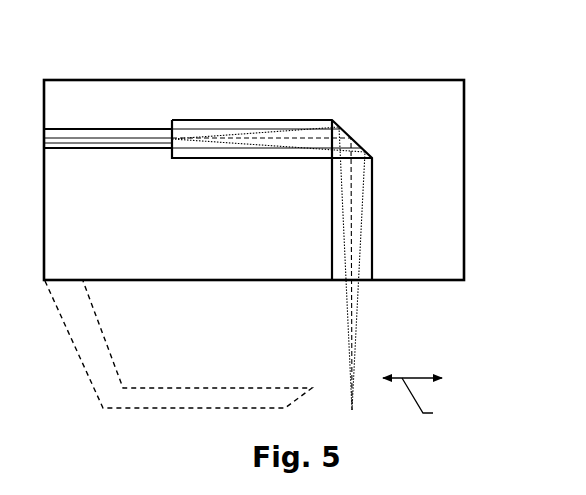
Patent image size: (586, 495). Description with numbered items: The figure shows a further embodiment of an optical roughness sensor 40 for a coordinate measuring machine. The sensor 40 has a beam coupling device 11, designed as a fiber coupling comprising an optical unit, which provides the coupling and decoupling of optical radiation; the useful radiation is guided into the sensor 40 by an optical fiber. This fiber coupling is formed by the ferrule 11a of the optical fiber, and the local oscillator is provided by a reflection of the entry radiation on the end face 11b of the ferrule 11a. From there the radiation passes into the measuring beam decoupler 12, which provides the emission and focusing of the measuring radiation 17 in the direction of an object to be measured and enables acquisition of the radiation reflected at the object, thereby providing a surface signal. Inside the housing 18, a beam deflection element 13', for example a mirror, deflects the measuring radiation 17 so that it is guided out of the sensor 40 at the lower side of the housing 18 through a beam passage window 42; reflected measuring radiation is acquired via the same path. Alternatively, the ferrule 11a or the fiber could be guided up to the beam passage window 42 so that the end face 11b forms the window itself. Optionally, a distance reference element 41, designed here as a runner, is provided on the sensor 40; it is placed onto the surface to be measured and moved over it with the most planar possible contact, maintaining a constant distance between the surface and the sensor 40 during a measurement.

The optical roughness sensor 40 is at (108, 48).
The housing 18 is at (464, 137).
The beam coupling device 11 is at (108, 175).
The ferrule 11a is at (145, 145).
The end face 11b is at (165, 122).
The measuring beam decoupler 12 is at (342, 232).
The beam deflection element 13' is at (379, 84).
The measuring radiation 17 is at (348, 320).
The beam passage window 42 is at (363, 280).
The distance reference element 41 is at (93, 377).